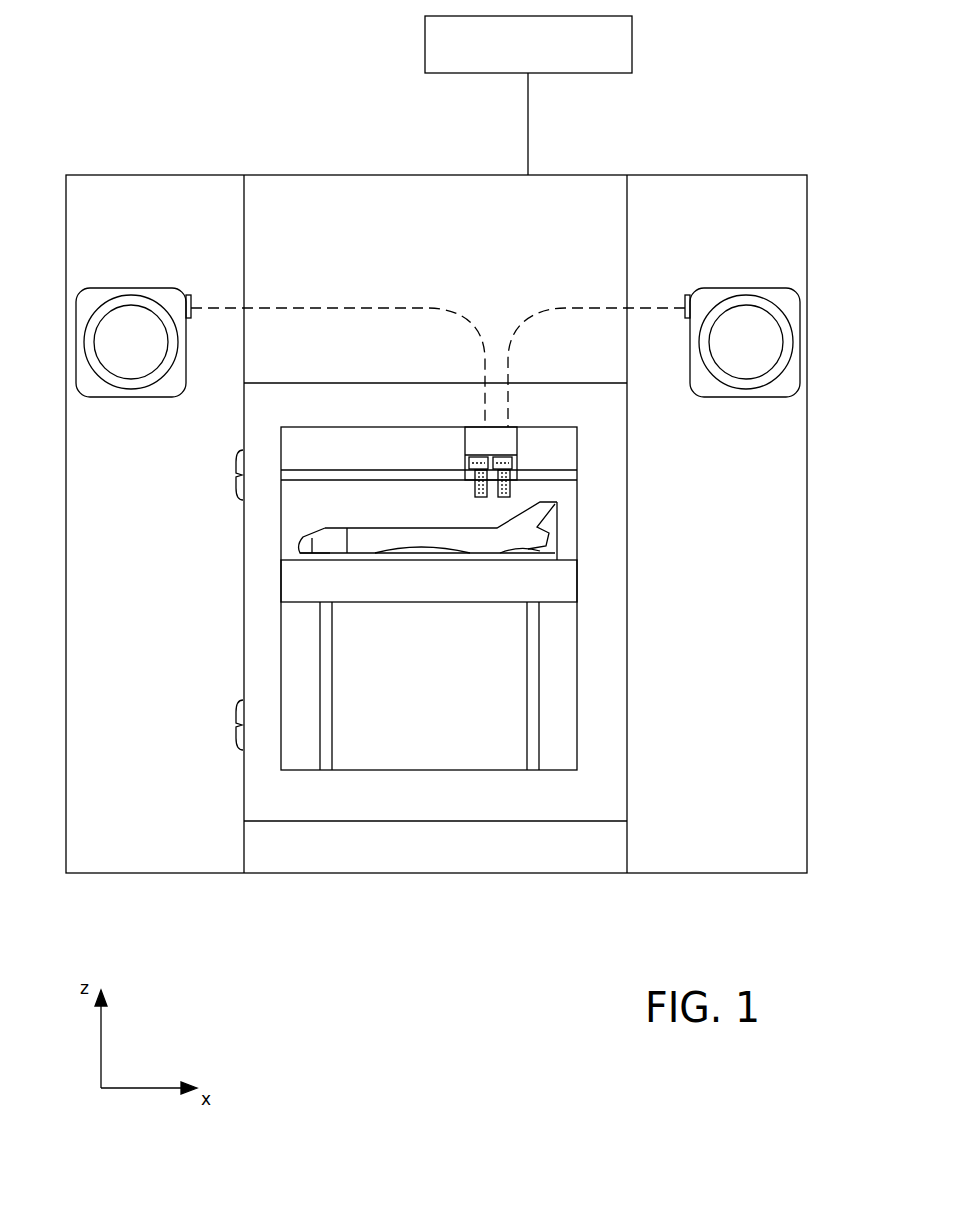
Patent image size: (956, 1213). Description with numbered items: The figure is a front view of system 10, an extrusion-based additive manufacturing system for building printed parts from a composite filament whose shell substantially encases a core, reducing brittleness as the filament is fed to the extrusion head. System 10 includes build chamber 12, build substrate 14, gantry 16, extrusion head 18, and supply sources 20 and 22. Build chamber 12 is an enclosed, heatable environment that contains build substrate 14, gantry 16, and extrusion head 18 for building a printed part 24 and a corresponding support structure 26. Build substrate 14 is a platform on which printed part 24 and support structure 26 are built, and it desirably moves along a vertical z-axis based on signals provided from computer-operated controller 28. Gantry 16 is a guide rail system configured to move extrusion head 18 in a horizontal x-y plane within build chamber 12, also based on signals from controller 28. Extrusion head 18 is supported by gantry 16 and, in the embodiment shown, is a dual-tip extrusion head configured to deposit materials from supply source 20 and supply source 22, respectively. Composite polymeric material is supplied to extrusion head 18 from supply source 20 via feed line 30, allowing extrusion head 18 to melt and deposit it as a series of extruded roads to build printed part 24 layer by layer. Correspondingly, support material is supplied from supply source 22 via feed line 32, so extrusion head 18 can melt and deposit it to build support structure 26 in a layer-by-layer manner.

The system 10 is at (273, 142).
The build chamber 12 is at (400, 770).
The build substrate 14 is at (567, 593).
The gantry 16 is at (347, 480).
The extrusion head 18 is at (542, 453).
The supply source 20 is at (716, 288).
The supply source 22 is at (99, 288).
The printed part 24 is at (327, 537).
The support structure 26 is at (552, 552).
The controller 28 is at (632, 28).
The feed line 30 is at (563, 305).
The feed line 32 is at (305, 305).